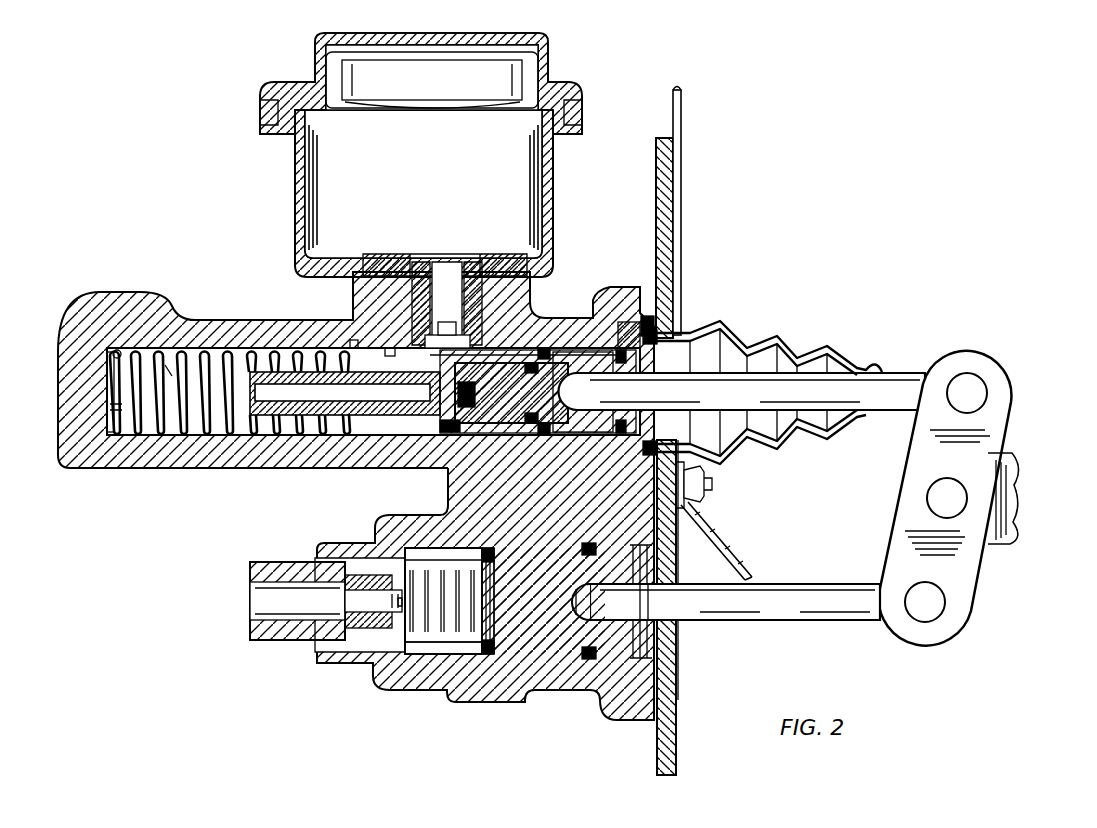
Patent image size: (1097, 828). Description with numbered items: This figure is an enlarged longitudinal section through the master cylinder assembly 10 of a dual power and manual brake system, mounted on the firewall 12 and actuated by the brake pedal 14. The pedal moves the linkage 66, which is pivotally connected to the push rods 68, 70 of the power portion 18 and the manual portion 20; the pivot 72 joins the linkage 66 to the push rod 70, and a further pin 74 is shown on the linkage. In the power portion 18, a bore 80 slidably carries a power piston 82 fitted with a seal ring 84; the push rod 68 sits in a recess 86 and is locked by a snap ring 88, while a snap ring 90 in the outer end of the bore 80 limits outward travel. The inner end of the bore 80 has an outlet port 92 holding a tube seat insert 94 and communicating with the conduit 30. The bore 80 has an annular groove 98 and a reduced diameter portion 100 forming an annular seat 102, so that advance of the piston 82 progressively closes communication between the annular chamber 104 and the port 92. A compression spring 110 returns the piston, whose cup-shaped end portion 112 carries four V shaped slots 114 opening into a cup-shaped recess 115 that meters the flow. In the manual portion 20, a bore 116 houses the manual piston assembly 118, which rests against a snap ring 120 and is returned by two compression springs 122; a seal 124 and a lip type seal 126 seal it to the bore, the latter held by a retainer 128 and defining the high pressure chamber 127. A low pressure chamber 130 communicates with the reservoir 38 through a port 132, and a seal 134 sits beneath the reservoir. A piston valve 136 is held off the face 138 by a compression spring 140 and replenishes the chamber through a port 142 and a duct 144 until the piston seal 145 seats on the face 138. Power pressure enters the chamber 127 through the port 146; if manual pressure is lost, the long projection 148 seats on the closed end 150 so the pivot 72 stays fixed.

The master cylinder assembly 10 is at (72, 222).
The firewall 12 is at (682, 128).
The brake pedal 14 is at (1012, 552).
The power fluid pressure generating portion 18 is at (462, 704).
The manual fluid pressure generating portion 20 is at (210, 478).
The conduit 30 is at (266, 562).
The reservoir 38 is at (556, 186).
The linkage 66 is at (1005, 445).
The push rod 68 is at (790, 622).
The push rod 70 is at (895, 378).
The pivot 72 is at (980, 392).
The pin 74 is at (935, 612).
The bore 80 is at (555, 655).
The power piston 82 is at (522, 660).
The seal ring 84 is at (588, 660).
The recess 86 is at (650, 613).
The snap ring 88 is at (586, 603).
The snap ring 90 is at (617, 662).
The outlet port 92 is at (380, 628).
The tube seat insert 94 is at (360, 600).
The annular groove 98 is at (492, 660).
The portion of reduced diameter 100 is at (430, 655).
The annular seat 102 is at (446, 512).
The annular chamber 104 is at (460, 660).
The compression spring 110 is at (398, 612).
The forward end portion 112 is at (448, 560).
The V shaped slots 114 is at (410, 562).
The cup-shaped recess 115 is at (496, 640).
The bore 116 is at (190, 445).
The manual piston assembly 118 is at (546, 360).
The snap ring 120 is at (648, 345).
The compression springs 122 is at (120, 440).
The seal 124 is at (626, 345).
The lip type seal 126 is at (355, 345).
The high pressure chamber 127 is at (170, 370).
The retainer 128 is at (390, 352).
The low pressure chamber 130 is at (472, 348).
The port 132 is at (440, 340).
The seal 134 is at (372, 332).
The piston valve 136 is at (520, 437).
The face 138 is at (511, 393).
The compression spring 140 is at (506, 440).
The port 142 is at (457, 335).
The duct 144 is at (330, 402).
The piston seal 145 is at (445, 433).
The port 146 is at (120, 350).
The projection 148 is at (270, 413).
The closed end 150 is at (115, 432).